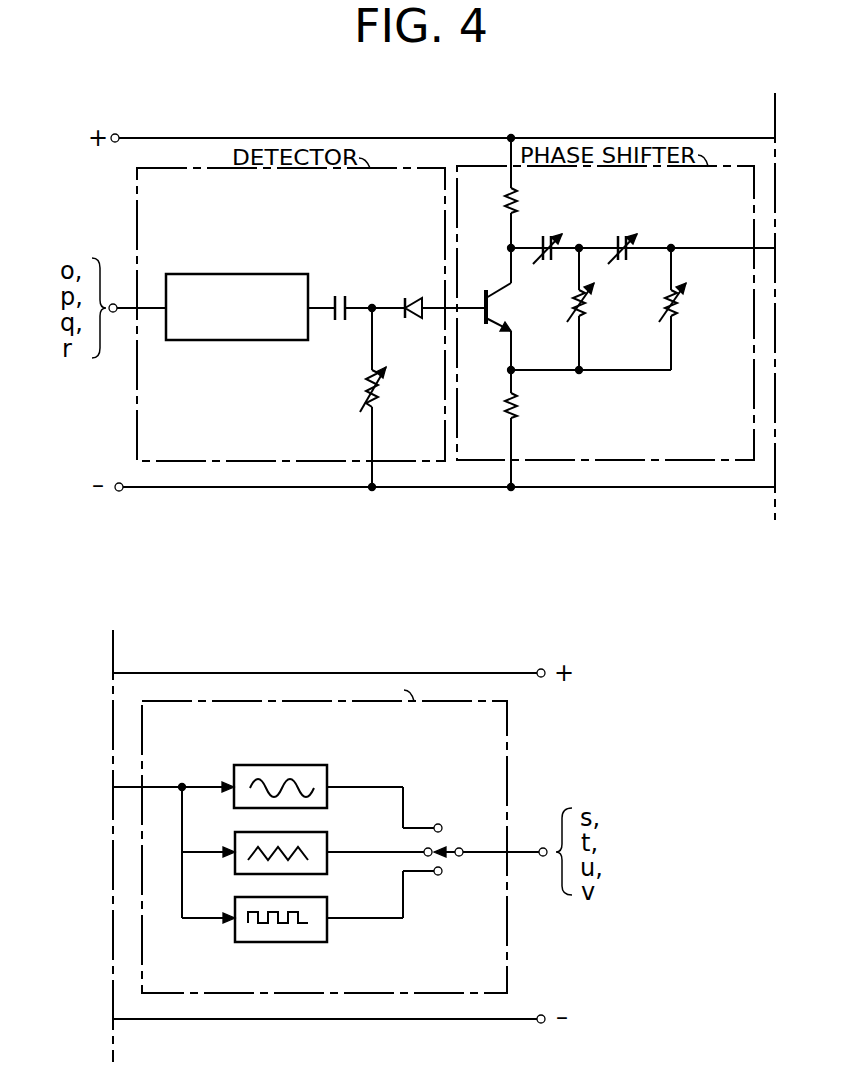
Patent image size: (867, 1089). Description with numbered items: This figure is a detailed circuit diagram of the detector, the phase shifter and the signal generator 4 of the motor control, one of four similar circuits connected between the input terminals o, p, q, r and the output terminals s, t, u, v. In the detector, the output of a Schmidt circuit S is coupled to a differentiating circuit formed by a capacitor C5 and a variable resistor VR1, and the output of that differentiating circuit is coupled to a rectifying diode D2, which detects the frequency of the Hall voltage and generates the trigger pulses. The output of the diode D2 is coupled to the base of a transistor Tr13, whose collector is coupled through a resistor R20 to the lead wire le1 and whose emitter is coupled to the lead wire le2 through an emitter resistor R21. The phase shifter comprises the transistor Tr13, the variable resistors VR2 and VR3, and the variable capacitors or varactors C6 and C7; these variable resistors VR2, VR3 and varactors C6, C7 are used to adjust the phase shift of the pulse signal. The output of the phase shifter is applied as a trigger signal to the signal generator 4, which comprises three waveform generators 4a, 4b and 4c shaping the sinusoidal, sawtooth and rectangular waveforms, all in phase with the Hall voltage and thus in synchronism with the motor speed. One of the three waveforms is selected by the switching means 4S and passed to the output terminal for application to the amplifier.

The lead wire le1 is at (347, 138).
The lead wire le2 is at (287, 487).
The Schmidt circuit S is at (240, 274).
The capacitor C5 is at (340, 292).
The rectifying diode D2 is at (412, 294).
The variable resistor VR1 is at (365, 388).
The resistor R20 is at (515, 196).
The transistor Tr13 is at (495, 309).
The variable capacitor (varactor) C6 is at (546, 262).
The variable capacitor (varactor) C7 is at (621, 234).
The variable resistor VR2 is at (590, 308).
The variable resistor VR3 is at (682, 308).
The emitter resistor R21 is at (516, 406).
The signal generator 4 is at (507, 920).
The waveform generator 4a is at (329, 771).
The waveform generator 4b is at (329, 838).
The waveform generator 4c is at (329, 903).
The switching means 4S is at (455, 845).